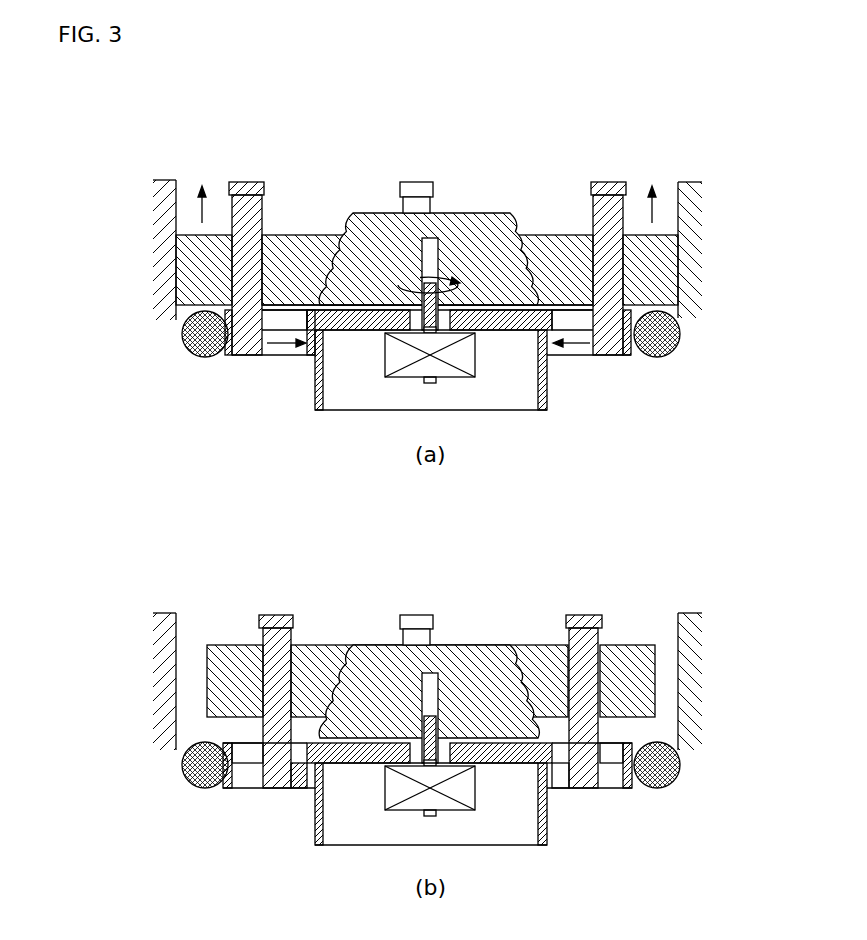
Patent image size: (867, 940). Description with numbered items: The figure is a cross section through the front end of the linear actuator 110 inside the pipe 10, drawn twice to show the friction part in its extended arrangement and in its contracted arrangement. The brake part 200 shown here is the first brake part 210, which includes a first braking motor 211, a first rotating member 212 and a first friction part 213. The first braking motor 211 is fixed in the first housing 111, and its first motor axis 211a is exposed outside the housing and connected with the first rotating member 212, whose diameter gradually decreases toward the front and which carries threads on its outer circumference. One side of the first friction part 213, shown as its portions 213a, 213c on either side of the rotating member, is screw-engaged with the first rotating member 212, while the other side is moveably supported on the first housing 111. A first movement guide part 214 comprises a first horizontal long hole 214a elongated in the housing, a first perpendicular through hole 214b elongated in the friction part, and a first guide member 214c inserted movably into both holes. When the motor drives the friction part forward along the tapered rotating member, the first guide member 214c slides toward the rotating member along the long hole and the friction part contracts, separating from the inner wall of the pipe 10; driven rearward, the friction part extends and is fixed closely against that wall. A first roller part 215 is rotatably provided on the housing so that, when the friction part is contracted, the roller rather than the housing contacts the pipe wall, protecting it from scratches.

The pipe 10 is at (162, 196).
The linear actuator 110 is at (368, 600).
The first housing 111 is at (315, 388).
The brake part 200 is at (460, 446).
The first brake part 210 is at (659, 229).
The first braking motor 211 is at (467, 358).
The first motor axis 211a is at (432, 280).
The first rotating member 212 is at (375, 212).
The first friction part 213 is at (425, 510).
The first friction part 213a is at (186, 273).
The first friction part 213c is at (670, 272).
The first movement guide part 214 is at (414, 429).
The first horizontal long hole 214a is at (281, 333).
The first perpendicular through hole 214b is at (256, 250).
The first guide member 214c is at (243, 181).
The first roller part 215 is at (186, 350).